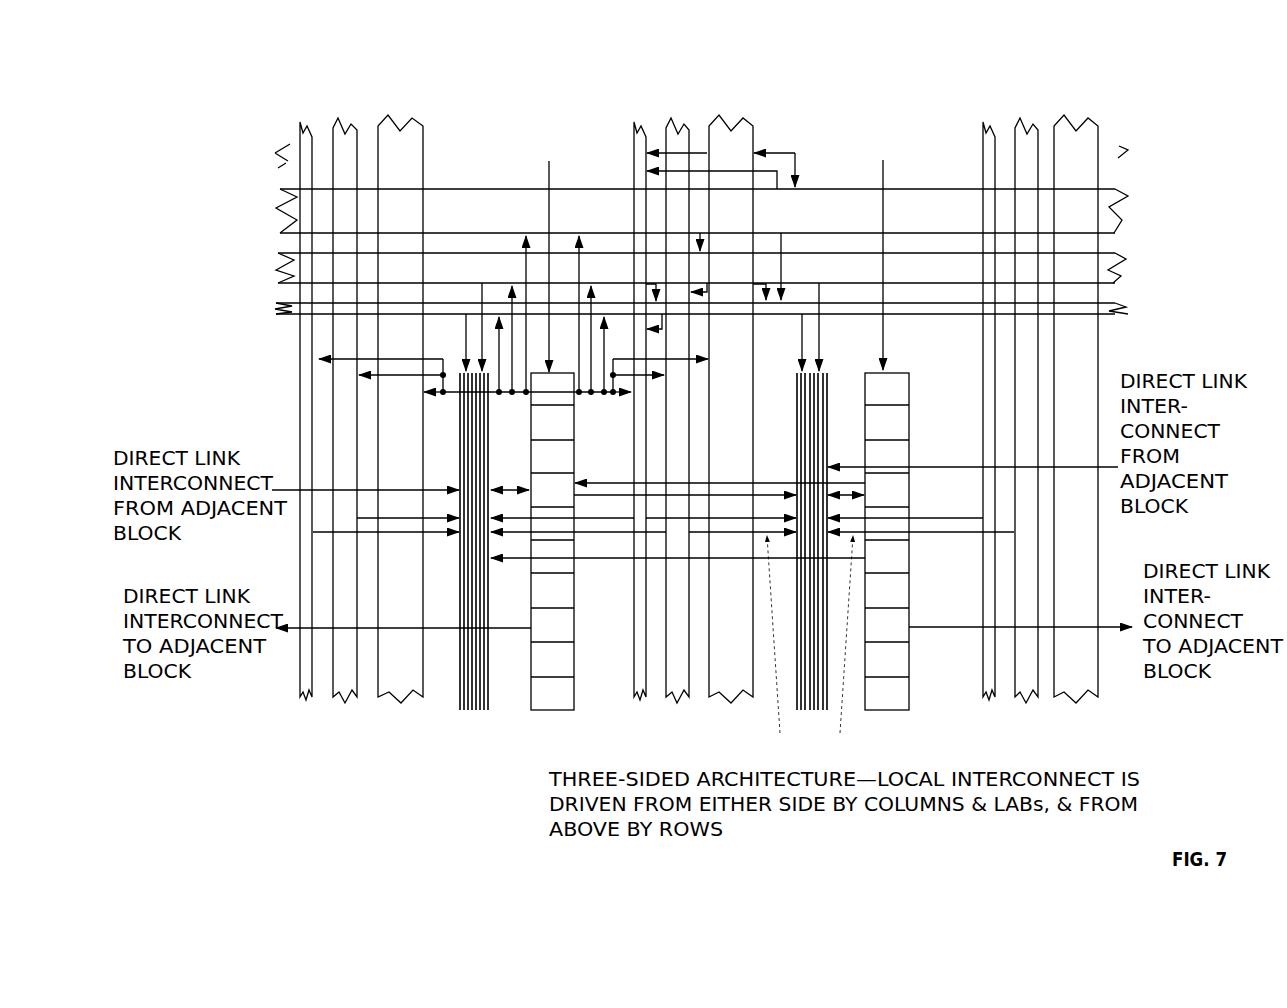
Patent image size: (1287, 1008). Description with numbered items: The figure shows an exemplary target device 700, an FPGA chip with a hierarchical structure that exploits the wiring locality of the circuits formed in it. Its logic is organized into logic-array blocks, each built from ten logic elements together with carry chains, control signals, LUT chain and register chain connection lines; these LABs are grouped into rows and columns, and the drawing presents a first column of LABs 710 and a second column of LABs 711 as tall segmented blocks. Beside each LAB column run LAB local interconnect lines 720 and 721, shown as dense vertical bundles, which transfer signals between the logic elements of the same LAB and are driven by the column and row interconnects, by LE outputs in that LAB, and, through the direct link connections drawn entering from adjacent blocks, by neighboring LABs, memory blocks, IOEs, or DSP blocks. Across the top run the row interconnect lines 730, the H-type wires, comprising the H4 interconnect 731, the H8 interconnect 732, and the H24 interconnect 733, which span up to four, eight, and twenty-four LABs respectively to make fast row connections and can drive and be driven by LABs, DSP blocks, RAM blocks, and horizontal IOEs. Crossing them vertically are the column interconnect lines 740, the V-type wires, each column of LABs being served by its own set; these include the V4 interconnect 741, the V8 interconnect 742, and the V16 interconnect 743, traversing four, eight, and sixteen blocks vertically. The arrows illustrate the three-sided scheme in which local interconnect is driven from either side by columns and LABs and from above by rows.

The target device 700 is at (216, 98).
The first column of LABs 710 is at (556, 715).
The second column of LABs 711 is at (888, 718).
The LAB local interconnect line 720 is at (472, 710).
The LAB local interconnect line 721 is at (815, 710).
The row interconnect lines 730 is at (265, 173).
The H4 interconnect 731 is at (1120, 313).
The H8 interconnect 732 is at (1124, 263).
The H24 interconnect 733 is at (1124, 199).
The column interconnect lines 740 is at (443, 110).
The V4 interconnect 741 is at (302, 704).
The V8 interconnect 742 is at (344, 706).
The V16 interconnect 743 is at (398, 707).